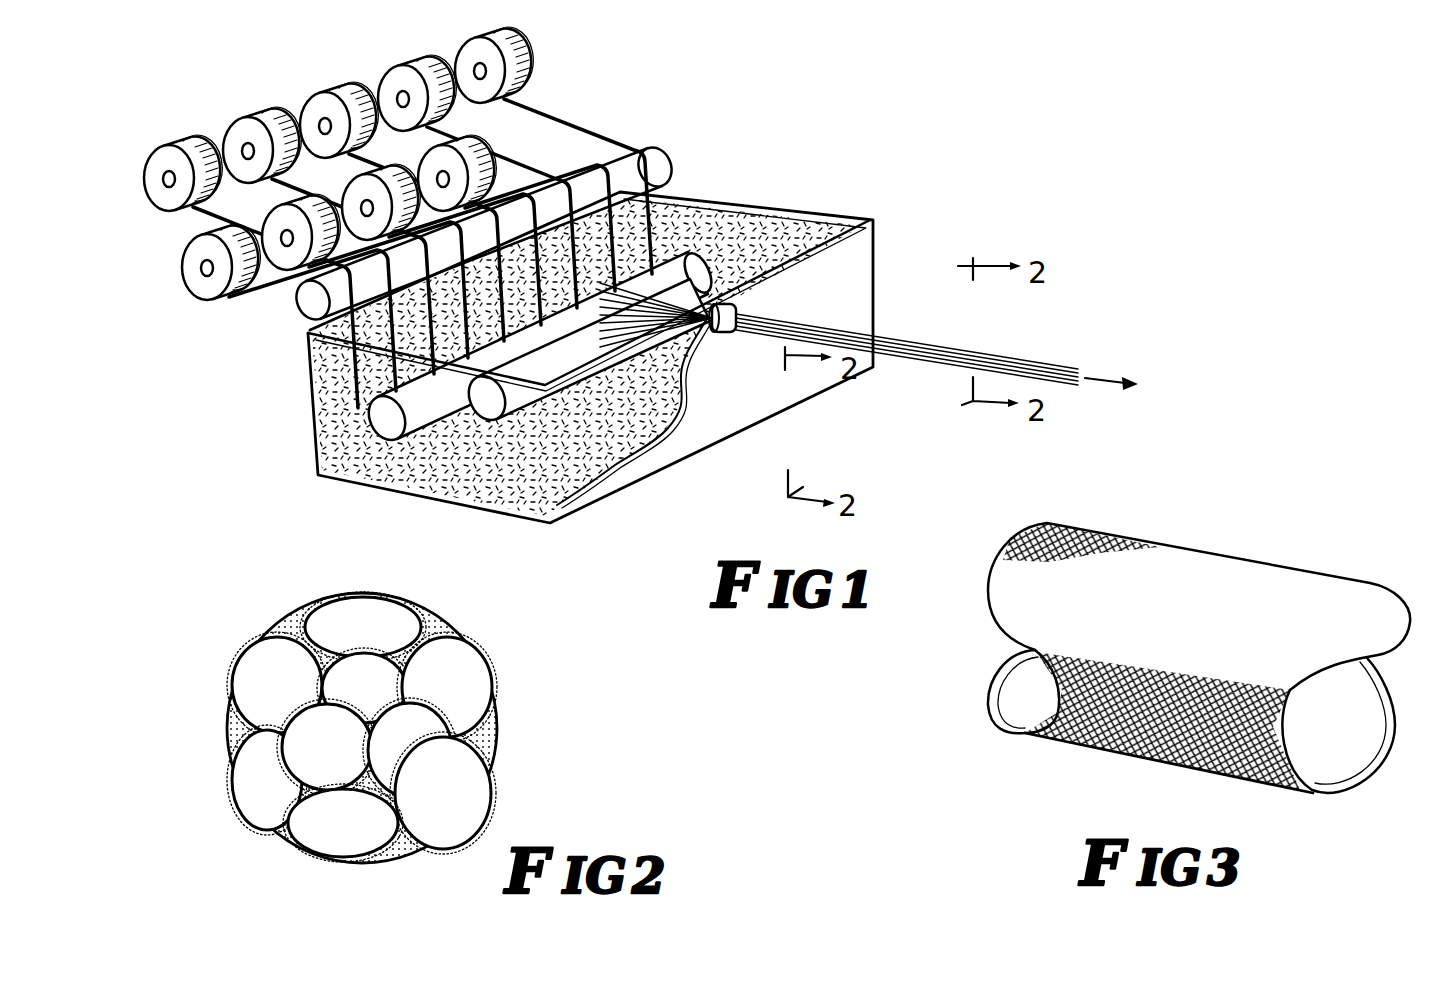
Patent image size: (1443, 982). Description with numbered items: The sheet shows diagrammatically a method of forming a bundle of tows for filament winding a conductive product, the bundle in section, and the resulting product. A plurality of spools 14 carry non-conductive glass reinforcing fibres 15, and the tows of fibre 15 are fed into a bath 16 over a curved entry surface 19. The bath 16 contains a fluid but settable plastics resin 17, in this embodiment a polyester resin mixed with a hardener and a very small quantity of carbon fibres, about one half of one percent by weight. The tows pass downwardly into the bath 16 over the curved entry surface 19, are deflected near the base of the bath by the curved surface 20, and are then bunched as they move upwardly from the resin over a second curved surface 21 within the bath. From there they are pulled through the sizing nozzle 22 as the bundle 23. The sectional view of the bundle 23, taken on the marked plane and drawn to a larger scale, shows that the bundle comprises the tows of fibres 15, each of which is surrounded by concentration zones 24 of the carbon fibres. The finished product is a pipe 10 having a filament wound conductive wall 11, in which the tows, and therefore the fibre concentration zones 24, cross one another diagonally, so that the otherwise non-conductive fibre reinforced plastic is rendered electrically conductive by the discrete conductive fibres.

In FIG. 3, the pipe 10 is at (1216, 571).
In FIG. 3, the filament wound conductive wall 11 is at (1212, 657).
In FIG. 1, the spools 14 is at (262, 114).
In FIG. 1, the non-conductive glass reinforcing fibres 15 is at (540, 113).
In FIG. 2, the non-conductive glass reinforcing fibres 15 is at (378, 687).
In FIG. 1, the bath 16 is at (695, 415).
In FIG. 1, the settable plastics resin 17 is at (493, 482).
In FIG. 1, the curved entry surface 19 is at (321, 299).
In FIG. 1, the curved surface 20 is at (376, 423).
In FIG. 1, the second curved surface 21 is at (481, 414).
In FIG. 1, the sizing nozzle 22 is at (740, 312).
In FIG. 1, the bundle 23 is at (880, 338).
In FIG. 2, the concentration zones 24 is at (440, 625).